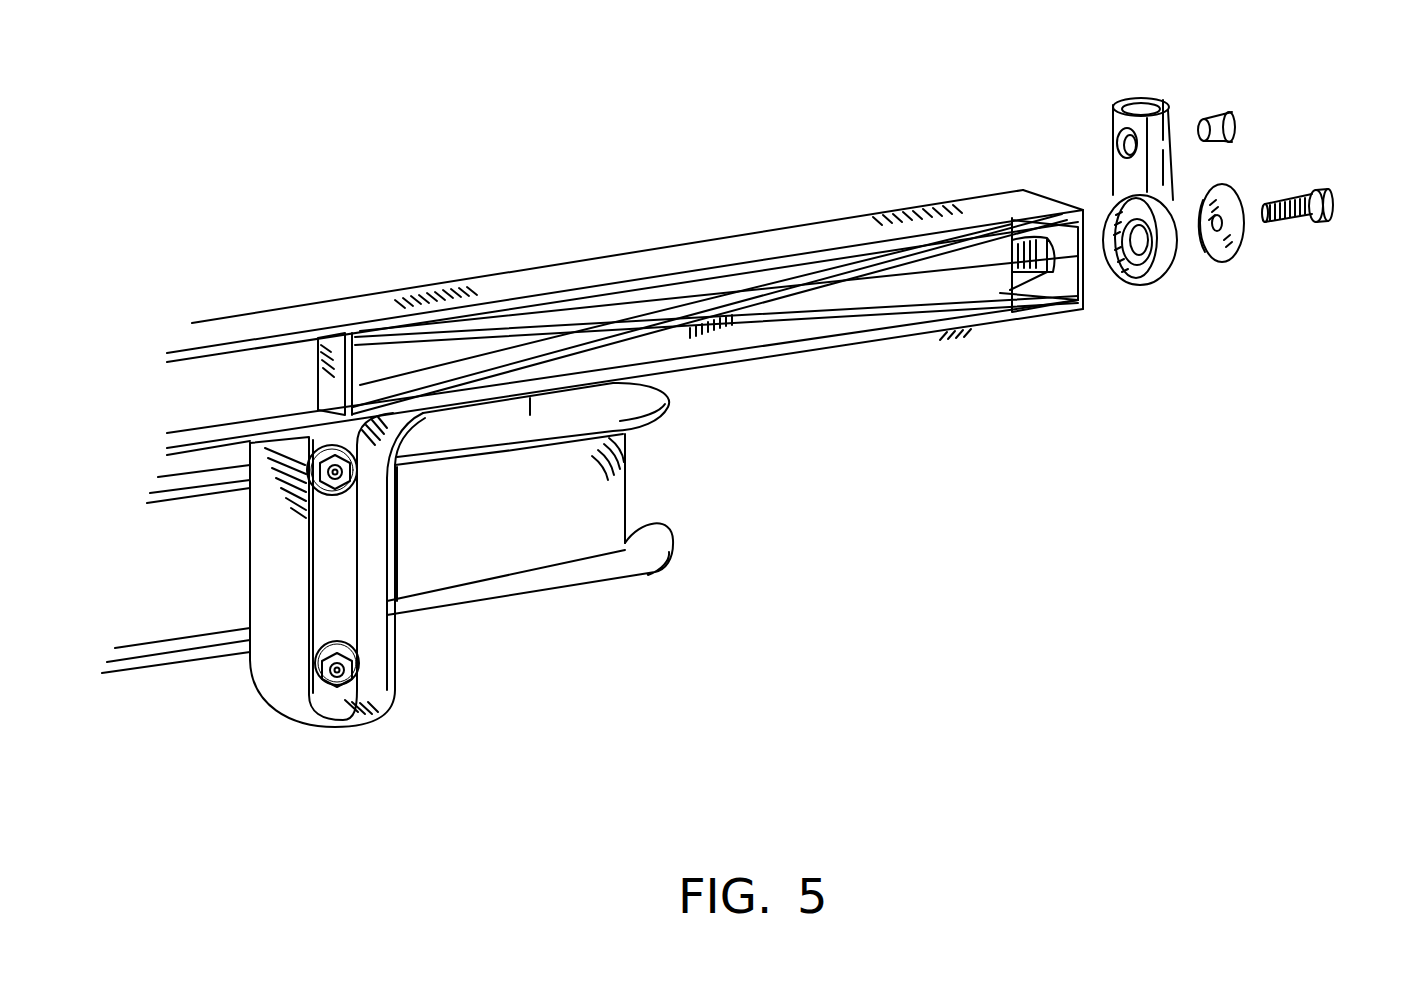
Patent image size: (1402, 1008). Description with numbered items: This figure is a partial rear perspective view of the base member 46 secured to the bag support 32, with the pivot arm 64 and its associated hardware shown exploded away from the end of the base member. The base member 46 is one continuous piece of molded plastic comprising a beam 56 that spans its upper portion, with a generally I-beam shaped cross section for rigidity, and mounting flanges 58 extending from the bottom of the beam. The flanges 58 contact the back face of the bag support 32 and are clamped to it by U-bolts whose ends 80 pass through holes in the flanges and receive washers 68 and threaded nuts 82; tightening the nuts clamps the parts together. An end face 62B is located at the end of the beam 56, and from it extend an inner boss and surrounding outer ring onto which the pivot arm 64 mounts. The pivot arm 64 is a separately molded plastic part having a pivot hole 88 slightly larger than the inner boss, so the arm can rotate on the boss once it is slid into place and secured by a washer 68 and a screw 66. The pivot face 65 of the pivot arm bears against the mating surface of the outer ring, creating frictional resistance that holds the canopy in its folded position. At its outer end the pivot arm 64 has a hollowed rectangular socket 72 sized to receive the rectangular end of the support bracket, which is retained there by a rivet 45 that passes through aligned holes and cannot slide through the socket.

The bag support 32 is at (640, 580).
The rivet 45 is at (1229, 116).
The base member 46 is at (615, 319).
The beam 56 is at (645, 248).
The mounting flange 58 is at (250, 672).
The end face 62B is at (1066, 197).
The pivot arm 64 is at (1129, 209).
The pivot face 65 is at (1120, 262).
The screw 66 is at (1323, 194).
The washer 68 is at (322, 503).
The hollowed rectangular socket 72 is at (1148, 104).
The U-bolt end 80 is at (343, 477).
The threaded nut 82 is at (337, 478).
The pivot hole 88 is at (1143, 250).